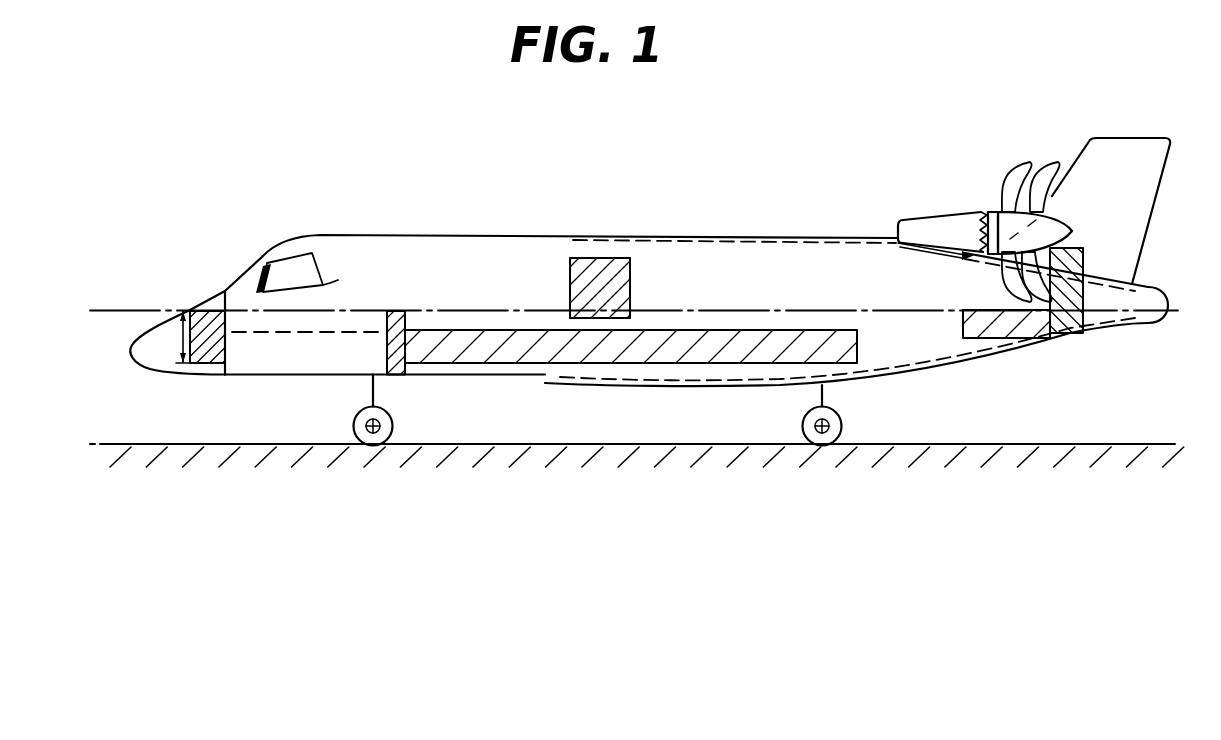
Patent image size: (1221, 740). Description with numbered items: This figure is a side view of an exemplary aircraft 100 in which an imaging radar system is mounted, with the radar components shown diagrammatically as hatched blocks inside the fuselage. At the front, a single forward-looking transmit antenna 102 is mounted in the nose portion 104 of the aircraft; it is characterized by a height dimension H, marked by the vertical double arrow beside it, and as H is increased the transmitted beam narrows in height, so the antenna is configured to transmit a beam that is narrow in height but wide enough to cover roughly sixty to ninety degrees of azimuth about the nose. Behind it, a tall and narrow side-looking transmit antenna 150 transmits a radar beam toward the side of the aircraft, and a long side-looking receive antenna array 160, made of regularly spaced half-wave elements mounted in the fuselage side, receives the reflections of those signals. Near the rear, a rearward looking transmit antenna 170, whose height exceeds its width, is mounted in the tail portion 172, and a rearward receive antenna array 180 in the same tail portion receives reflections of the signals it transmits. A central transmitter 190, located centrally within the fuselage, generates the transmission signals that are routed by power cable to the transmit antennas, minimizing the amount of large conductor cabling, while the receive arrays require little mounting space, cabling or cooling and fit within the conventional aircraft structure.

The aircraft 100 is at (540, 223).
The forward-looking transmit antenna 102 is at (208, 358).
The nose portion 104 is at (138, 362).
The side-looking transmit antenna 150 is at (405, 375).
The side-looking receive antenna array 160 is at (510, 358).
The rearward looking transmit antenna 170 is at (1073, 282).
The tail portion 172 is at (1147, 327).
The rearward receive antenna array 180 is at (1068, 337).
The central transmitter 190 is at (617, 257).
The height dimension H is at (181, 338).